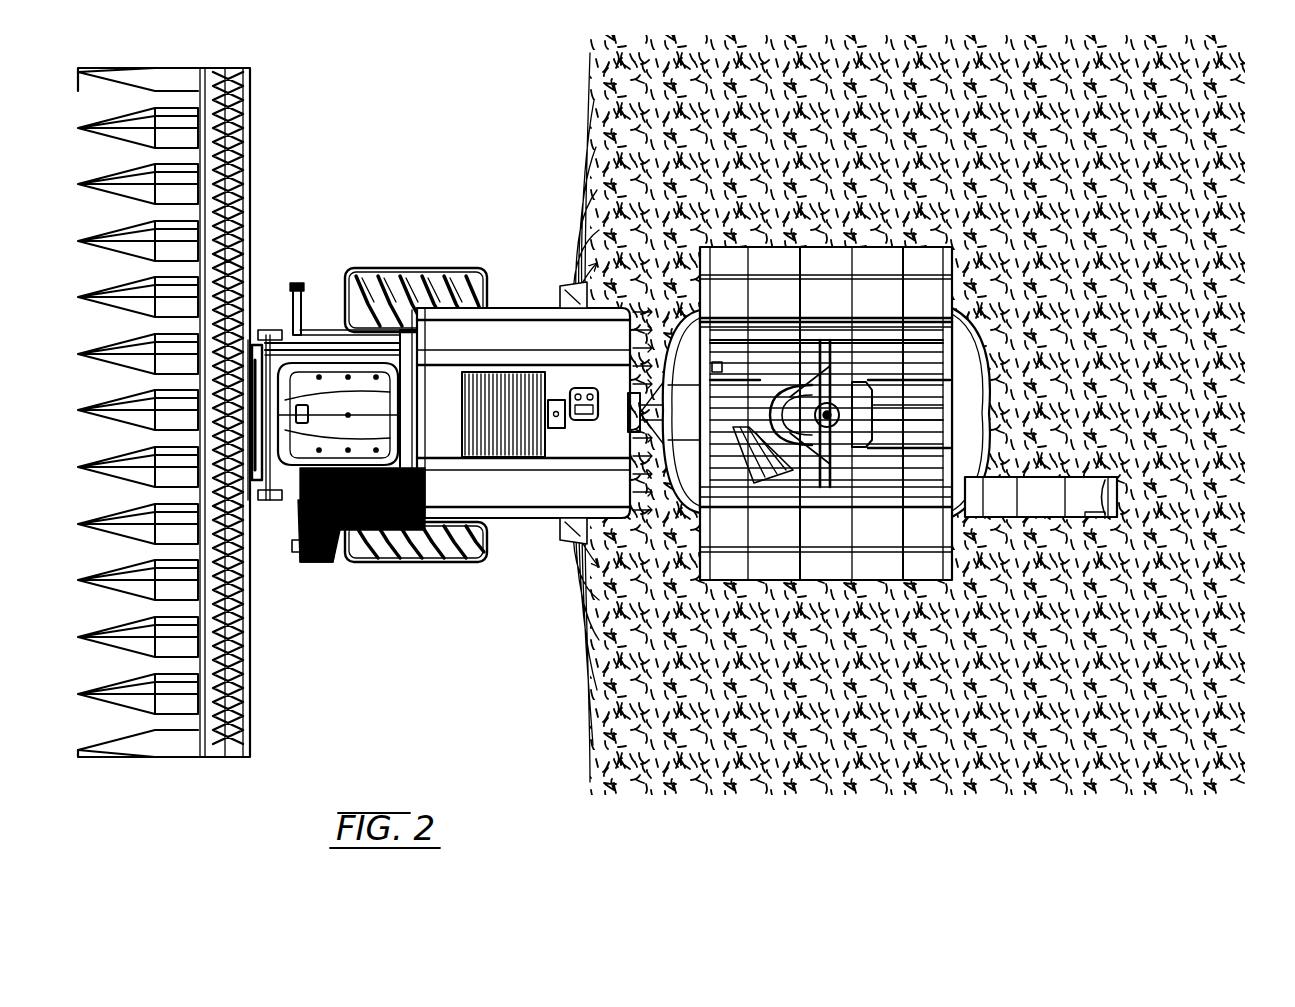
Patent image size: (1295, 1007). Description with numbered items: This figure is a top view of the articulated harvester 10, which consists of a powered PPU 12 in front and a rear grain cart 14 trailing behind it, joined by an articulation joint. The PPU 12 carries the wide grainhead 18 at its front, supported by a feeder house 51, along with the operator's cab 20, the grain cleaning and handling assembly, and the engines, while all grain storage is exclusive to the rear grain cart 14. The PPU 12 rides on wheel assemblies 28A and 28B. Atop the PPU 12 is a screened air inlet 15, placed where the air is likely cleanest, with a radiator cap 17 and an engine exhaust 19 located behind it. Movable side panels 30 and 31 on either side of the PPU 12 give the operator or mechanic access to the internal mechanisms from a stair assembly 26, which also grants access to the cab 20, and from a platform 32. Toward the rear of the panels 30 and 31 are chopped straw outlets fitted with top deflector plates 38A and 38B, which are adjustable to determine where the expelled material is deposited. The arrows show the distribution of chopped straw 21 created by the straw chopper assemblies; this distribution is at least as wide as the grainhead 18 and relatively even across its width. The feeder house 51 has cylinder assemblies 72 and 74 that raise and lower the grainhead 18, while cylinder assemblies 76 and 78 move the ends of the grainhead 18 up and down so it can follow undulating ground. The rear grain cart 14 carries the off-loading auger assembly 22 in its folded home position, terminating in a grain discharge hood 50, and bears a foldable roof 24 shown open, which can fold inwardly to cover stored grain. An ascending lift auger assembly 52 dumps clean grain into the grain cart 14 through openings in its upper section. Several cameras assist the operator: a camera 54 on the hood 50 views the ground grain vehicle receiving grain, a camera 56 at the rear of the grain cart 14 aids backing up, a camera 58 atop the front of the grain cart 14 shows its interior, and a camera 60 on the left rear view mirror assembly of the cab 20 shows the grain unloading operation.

The articulated harvester 10 is at (408, 103).
The powered PPU 12 is at (418, 203).
The rear grain cart 14 is at (720, 222).
The screened air inlet 15 is at (515, 372).
The radiator cap 17 is at (553, 400).
The grainhead 18 is at (255, 141).
The engine exhaust 19 is at (582, 422).
The operator's cab 20 is at (331, 378).
The chopped straw 21 is at (655, 72).
The off-loading auger assembly 22 is at (1060, 507).
The foldable roof 24 is at (840, 309).
The stair assembly 26 is at (320, 560).
The wheel assembly 28A is at (418, 558).
The wheel assembly 28B is at (420, 276).
The movable side panel 30 is at (520, 516).
The movable side panel 31 is at (511, 310).
The platform 32 is at (392, 560).
The top deflector plate 38A is at (564, 545).
The top deflector plate 38B is at (565, 290).
The grain discharge hood 50 is at (1095, 514).
The feeder house 51 is at (284, 316).
The ascending lift auger assembly 52 is at (812, 432).
The camera 54 is at (1118, 495).
The camera 56 is at (990, 405).
The camera 58 is at (716, 432).
The camera 60 is at (296, 550).
The cylinder assembly 72 is at (266, 508).
The cylinder assembly 74 is at (266, 322).
The cylinder assembly 76 is at (257, 502).
The cylinder assembly 78 is at (256, 318).